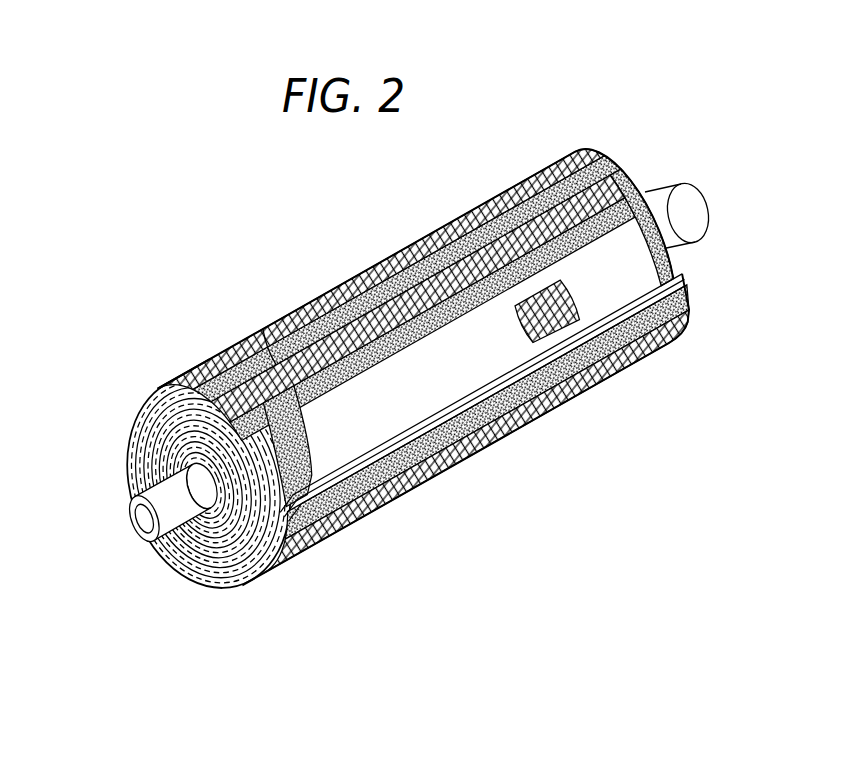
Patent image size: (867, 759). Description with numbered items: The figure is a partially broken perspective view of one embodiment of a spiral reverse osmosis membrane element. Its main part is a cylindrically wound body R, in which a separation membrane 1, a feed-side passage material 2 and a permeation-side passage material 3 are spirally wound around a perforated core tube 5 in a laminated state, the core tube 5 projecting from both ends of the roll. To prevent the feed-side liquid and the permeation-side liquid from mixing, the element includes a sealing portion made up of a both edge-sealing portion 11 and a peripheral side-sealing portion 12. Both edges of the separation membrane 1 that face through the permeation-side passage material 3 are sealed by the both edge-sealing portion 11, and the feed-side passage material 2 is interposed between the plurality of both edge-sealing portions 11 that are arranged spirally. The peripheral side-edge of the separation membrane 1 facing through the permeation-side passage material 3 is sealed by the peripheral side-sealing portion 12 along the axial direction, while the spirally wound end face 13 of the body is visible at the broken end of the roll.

The separation membrane 1 is at (316, 300).
The feed-side passage material 2 is at (263, 328).
The permeation-side passage material 3 is at (563, 318).
The perforated core tube 5 is at (173, 520).
The both edge-sealing portion 11 is at (667, 257).
The peripheral side-sealing portion 12 is at (413, 238).
The wound end face 13 is at (170, 458).
The cylindrically wound body R is at (164, 364).